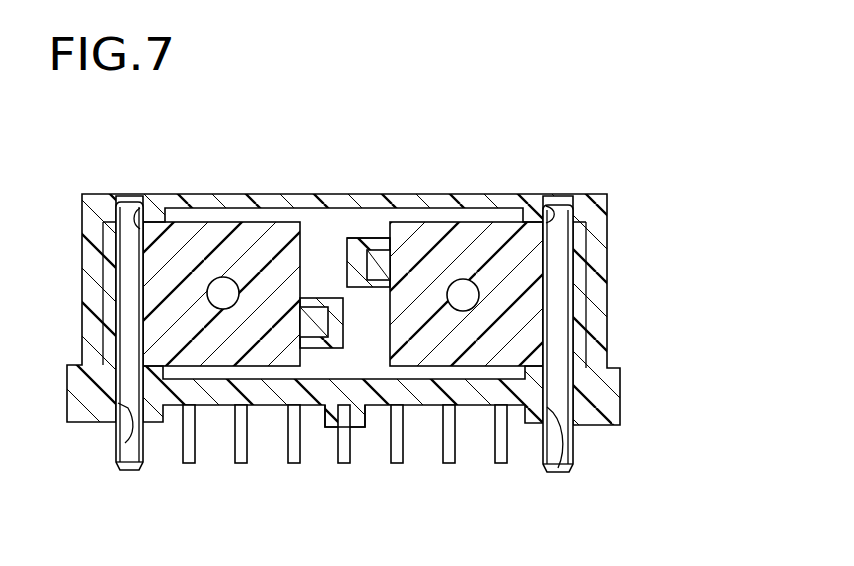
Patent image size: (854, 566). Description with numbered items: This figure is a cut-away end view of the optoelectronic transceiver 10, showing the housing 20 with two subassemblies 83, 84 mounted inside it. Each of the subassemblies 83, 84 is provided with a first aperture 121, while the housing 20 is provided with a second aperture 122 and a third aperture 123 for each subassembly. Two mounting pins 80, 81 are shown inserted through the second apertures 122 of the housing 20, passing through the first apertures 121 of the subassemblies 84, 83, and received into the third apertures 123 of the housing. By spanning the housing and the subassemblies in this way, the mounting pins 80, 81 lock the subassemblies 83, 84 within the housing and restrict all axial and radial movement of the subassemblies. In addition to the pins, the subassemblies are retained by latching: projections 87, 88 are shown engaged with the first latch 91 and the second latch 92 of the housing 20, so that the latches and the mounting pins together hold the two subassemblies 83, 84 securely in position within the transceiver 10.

The transceiver 10 is at (640, 266).
The housing 20 is at (598, 340).
The mounting pin 80 is at (130, 470).
The mounting pin 81 is at (567, 472).
The subassembly 83 is at (420, 253).
The subassembly 84 is at (220, 232).
The projection 87 is at (375, 265).
The projection 88 is at (317, 317).
The first latch 91 is at (357, 250).
The second latch 92 is at (338, 352).
The first aperture 121 is at (117, 263).
The second aperture 122 is at (125, 443).
The third aperture 123 is at (143, 206).